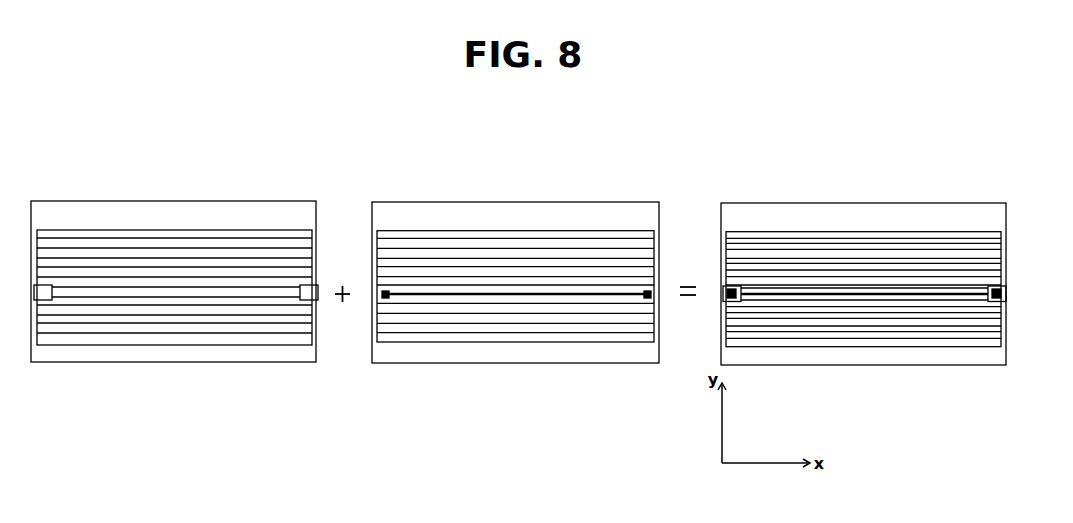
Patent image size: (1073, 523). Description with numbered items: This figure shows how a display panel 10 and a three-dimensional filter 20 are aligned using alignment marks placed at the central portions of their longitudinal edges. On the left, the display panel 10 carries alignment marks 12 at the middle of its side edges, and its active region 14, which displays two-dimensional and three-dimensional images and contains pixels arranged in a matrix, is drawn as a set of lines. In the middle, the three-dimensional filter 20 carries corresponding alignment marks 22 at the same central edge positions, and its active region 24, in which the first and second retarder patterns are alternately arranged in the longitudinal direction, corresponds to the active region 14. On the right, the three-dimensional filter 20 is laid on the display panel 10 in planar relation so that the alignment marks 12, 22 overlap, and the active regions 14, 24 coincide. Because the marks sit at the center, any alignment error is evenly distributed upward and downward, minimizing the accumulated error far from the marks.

The display panel 10 is at (172, 201).
The alignment marks 12 is at (44, 285).
The active region 14 is at (224, 230).
The 3D filter 20 is at (516, 202).
The alignment marks 22 is at (386, 291).
The active region 24 is at (568, 230).